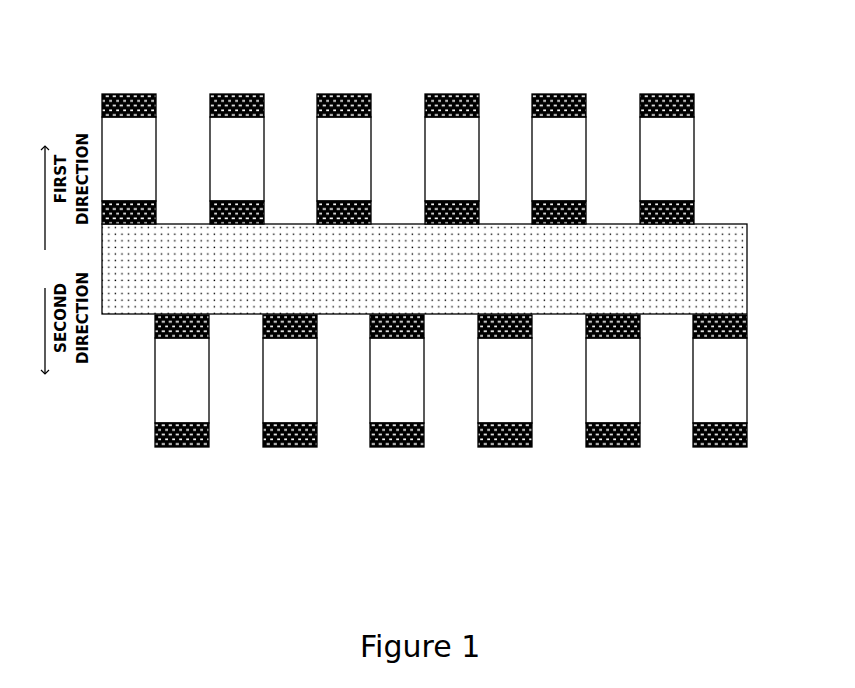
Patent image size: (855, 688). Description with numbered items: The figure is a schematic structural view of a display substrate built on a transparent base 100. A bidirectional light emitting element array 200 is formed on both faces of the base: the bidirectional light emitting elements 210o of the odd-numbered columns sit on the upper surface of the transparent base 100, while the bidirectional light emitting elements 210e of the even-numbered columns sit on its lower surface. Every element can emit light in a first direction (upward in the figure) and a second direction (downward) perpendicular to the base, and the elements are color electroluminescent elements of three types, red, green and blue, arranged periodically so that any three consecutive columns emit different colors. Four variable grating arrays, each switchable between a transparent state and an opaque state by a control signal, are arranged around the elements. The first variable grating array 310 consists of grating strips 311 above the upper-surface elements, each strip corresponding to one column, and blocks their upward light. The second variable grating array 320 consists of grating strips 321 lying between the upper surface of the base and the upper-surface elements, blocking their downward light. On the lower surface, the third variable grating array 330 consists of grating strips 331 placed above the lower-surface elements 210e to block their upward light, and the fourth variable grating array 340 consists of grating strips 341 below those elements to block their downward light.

The transparent base 100 is at (764, 224).
The bidirectional light emitting element array 200 is at (764, 117).
The bidirectional light emitting elements in odd-numbered columns 210o is at (417, 218).
The bidirectional light emitting elements in even-numbered columns 210e is at (453, 434).
The first variable grating array 310 is at (456, 70).
The grating strip 311 is at (681, 101).
The second variable grating array 320 is at (456, 193).
The grating strip 321 is at (694, 201).
The third variable grating array 330 is at (453, 343).
The grating strip 331 is at (155, 336).
The fourth variable grating array 340 is at (460, 453).
The grating strip 341 is at (172, 447).